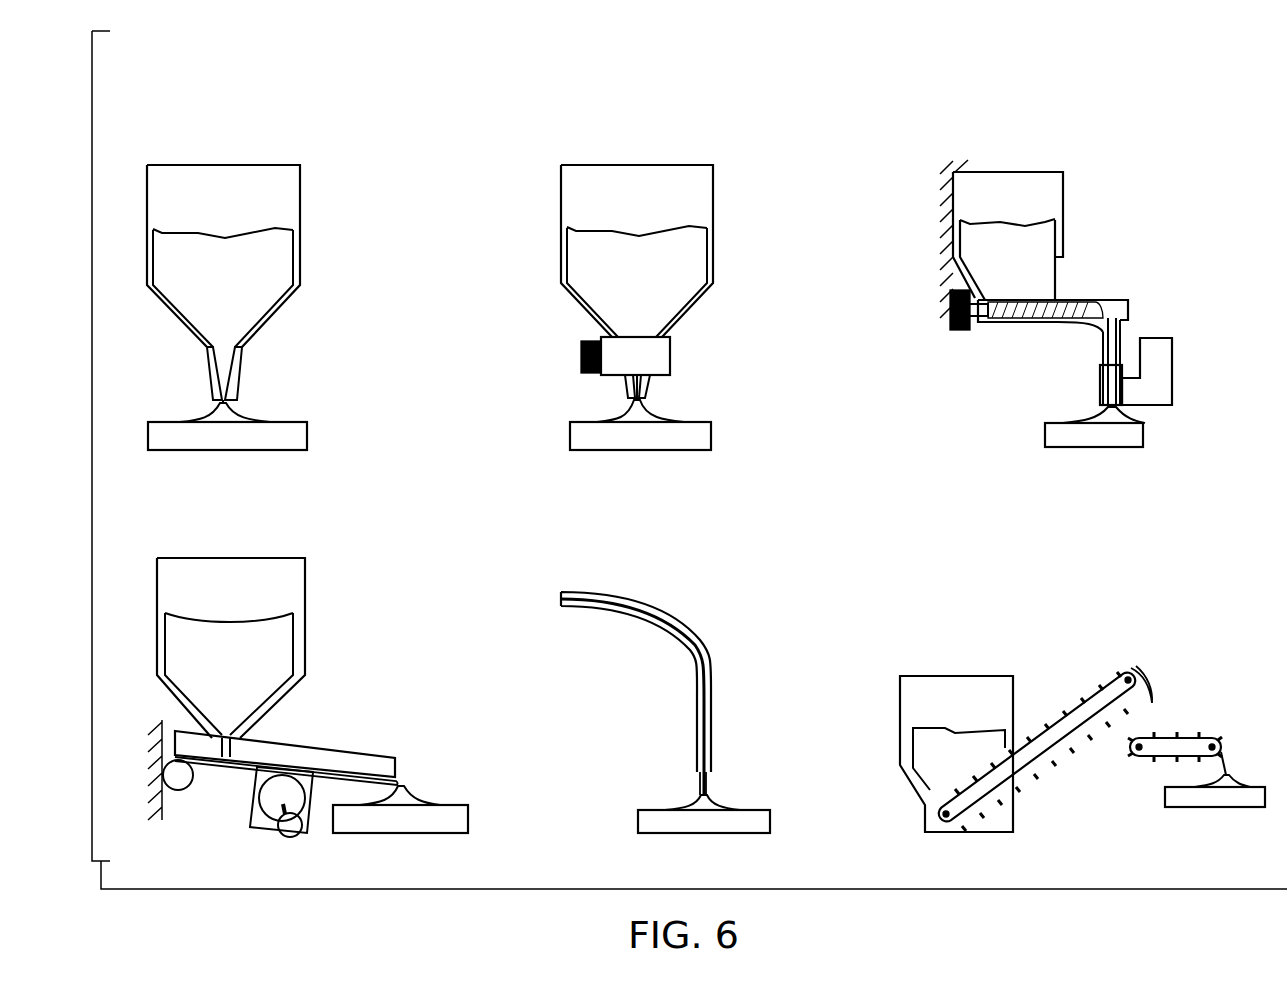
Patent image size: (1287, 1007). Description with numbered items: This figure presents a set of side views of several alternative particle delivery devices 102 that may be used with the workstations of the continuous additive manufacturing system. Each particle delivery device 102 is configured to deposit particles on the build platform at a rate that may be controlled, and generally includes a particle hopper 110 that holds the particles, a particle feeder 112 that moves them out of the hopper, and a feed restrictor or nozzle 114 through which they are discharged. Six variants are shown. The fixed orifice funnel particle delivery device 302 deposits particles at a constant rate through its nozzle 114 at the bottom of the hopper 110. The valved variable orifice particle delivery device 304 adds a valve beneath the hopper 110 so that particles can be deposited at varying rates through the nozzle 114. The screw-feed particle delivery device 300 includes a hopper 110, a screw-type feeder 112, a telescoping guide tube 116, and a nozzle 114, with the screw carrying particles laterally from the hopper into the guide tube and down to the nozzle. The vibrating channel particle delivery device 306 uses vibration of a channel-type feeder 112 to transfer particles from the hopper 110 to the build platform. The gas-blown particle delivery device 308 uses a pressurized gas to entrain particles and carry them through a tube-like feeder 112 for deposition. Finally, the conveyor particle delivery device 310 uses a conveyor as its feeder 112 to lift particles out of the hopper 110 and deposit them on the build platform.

The particle delivery device 102 is at (182, 124).
The particle hopper 110 is at (280, 178).
The particle feeder 112 is at (1080, 312).
The nozzle 114 is at (238, 376).
The telescoping guide tube 116 is at (1114, 348).
The screw-feed particle delivery device 300 is at (1010, 142).
The fixed orifice funnel particle delivery device 302 is at (218, 138).
The valved variable orifice particle delivery device 304 is at (632, 140).
The vibrating channel particle delivery device 306 is at (318, 645).
The gas-blown particle delivery device 308 is at (662, 590).
The conveyor particle delivery device 310 is at (950, 634).